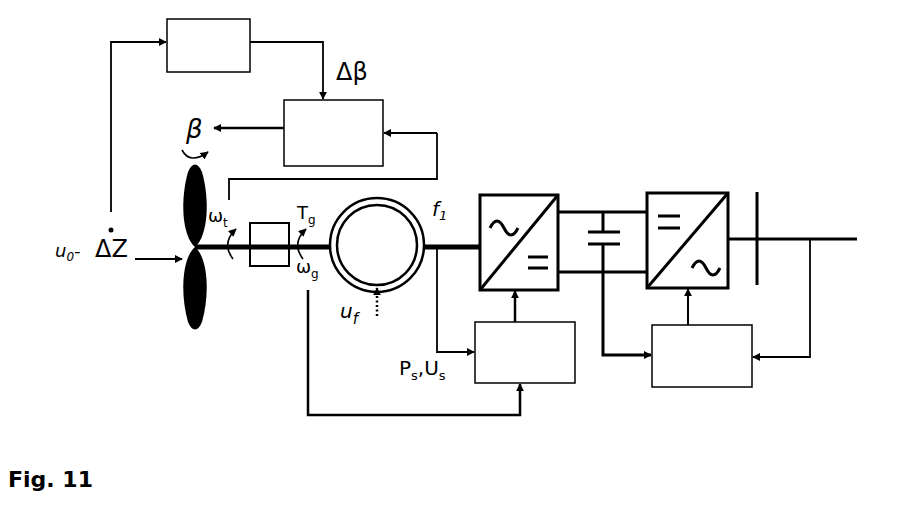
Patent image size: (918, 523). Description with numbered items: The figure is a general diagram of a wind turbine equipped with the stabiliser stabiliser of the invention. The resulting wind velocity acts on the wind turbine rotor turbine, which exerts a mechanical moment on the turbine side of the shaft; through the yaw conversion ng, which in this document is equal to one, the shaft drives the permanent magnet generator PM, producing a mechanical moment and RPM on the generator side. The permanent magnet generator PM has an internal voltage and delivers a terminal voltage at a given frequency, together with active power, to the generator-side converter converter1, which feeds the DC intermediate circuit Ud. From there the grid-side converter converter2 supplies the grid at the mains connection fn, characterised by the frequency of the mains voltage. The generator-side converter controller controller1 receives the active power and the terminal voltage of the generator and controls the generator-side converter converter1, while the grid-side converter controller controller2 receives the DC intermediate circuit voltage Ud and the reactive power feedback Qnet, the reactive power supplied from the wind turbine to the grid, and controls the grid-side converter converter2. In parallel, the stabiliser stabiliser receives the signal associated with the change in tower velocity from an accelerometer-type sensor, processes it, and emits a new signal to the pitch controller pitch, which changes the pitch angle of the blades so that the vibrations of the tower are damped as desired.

The element stabiliser is at (208, 45).
The pitch controller pitch is at (333, 133).
The wind turbine rotor turbine is at (215, 247).
The yaw conversion ng is at (269, 230).
The permanent magnet generator PM is at (377, 245).
The generator-side converter converter1 is at (519, 242).
The DC intermediate circuit Ud is at (619, 297).
The generator-side converter controller controller1 is at (525, 352).
The grid-side converter converter2 is at (687, 240).
The mains connection fn is at (745, 222).
The reactive power feedback Qnet is at (781, 314).
The grid-side converter controller controller2 is at (702, 356).